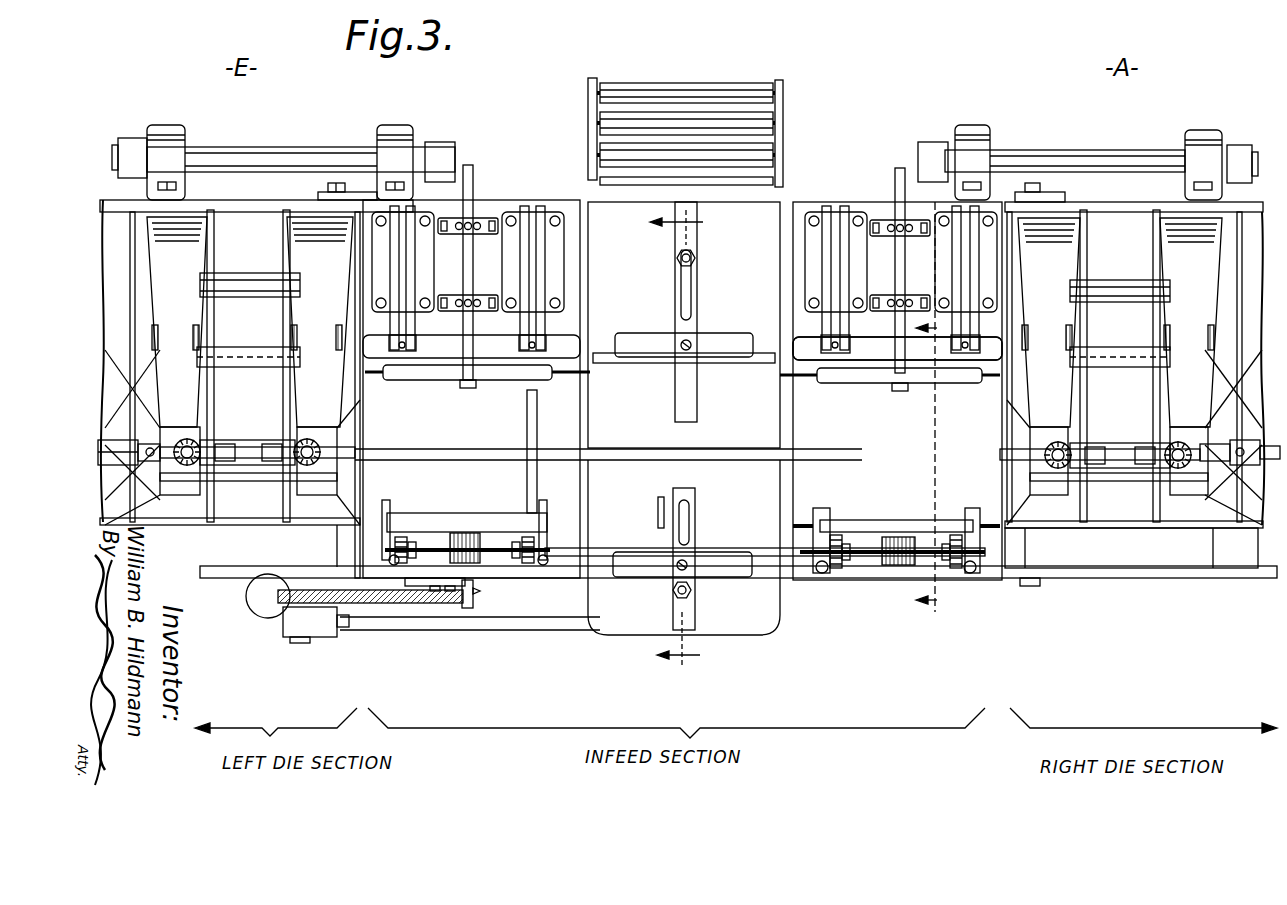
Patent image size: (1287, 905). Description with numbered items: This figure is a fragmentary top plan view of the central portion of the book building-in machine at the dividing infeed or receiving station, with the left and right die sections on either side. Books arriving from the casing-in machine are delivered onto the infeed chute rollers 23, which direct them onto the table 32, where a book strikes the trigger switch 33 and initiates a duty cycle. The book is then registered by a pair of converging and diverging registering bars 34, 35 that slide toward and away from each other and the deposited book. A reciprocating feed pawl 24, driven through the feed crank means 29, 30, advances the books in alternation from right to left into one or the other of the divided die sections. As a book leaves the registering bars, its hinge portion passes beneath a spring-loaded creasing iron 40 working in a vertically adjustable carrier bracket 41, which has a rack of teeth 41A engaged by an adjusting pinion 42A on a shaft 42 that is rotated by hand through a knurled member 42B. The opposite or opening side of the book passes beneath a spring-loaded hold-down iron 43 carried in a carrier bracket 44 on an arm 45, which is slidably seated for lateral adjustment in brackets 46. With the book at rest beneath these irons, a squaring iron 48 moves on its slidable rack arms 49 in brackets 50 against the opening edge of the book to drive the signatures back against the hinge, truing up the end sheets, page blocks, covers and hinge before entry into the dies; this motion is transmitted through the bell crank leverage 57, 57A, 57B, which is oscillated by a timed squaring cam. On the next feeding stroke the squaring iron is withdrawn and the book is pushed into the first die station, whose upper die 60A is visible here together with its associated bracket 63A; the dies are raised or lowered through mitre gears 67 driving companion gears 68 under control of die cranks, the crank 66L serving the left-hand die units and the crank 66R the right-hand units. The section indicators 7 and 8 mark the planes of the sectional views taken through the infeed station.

The section line 7- 7 is at (685, 440).
The section line 8- 8 is at (937, 413).
The infeed chute rollers 23 is at (760, 122).
The reciprocating feed pawl 24 is at (525, 432).
The feed crank means 29 is at (560, 622).
The feed crank means 30 is at (450, 606).
The table 32 is at (755, 491).
The trigger switch 33 is at (652, 512).
The registering bar 34 is at (745, 532).
The registering bar 35 is at (752, 364).
The creasing iron 40 is at (800, 522).
The carrier bracket 41 is at (860, 512).
The rack of teeth 41A is at (856, 536).
The shaft 42 is at (870, 556).
The adjusting pinion 42A is at (838, 568).
The knurled member 42B is at (905, 565).
The hold-down iron 43 is at (798, 380).
The carrier bracket 44 is at (880, 383).
The arm 45 is at (898, 328).
The brackets 46 is at (892, 240).
The squaring iron 48 is at (920, 355).
The slidable rack arms 49 is at (826, 326).
The brackets 50 is at (805, 265).
The bell crank lever 57 is at (898, 192).
The bell crank leverage 57A is at (1112, 160).
The bell crank leverage 57B is at (1240, 195).
The upper die 60A is at (1130, 508).
The cross bar 63A is at (1182, 306).
The crank 66L is at (365, 432).
The right drive shaft coupling 66R is at (998, 440).
The mitre gears 67 is at (1160, 440).
The companion gears 68 is at (1178, 432).